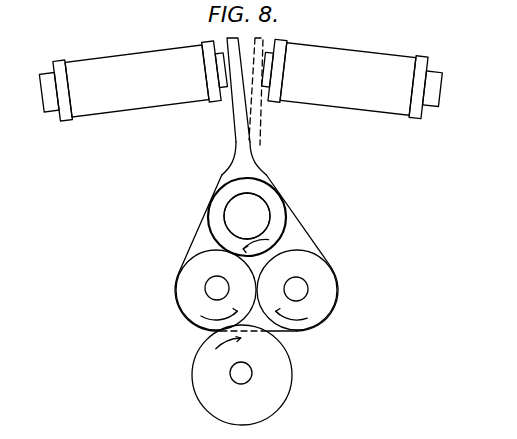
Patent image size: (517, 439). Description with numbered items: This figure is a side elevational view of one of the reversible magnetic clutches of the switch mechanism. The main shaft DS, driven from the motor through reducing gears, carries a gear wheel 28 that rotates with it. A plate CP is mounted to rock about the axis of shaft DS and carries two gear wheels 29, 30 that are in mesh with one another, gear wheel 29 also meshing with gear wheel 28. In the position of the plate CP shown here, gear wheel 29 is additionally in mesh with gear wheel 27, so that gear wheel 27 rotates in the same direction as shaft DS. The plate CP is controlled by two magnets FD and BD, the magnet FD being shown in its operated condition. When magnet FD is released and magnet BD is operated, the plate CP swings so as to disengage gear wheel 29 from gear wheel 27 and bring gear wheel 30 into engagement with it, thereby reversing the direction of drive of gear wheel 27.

The gear wheel 27 is at (260, 382).
The gear wheel 28 is at (218, 210).
The gear wheel 29 is at (202, 266).
The gear wheel 30 is at (325, 287).
The magnet FD is at (130, 95).
The magnet BD is at (392, 88).
The main shaft DS is at (247, 216).
The plate CP is at (288, 238).